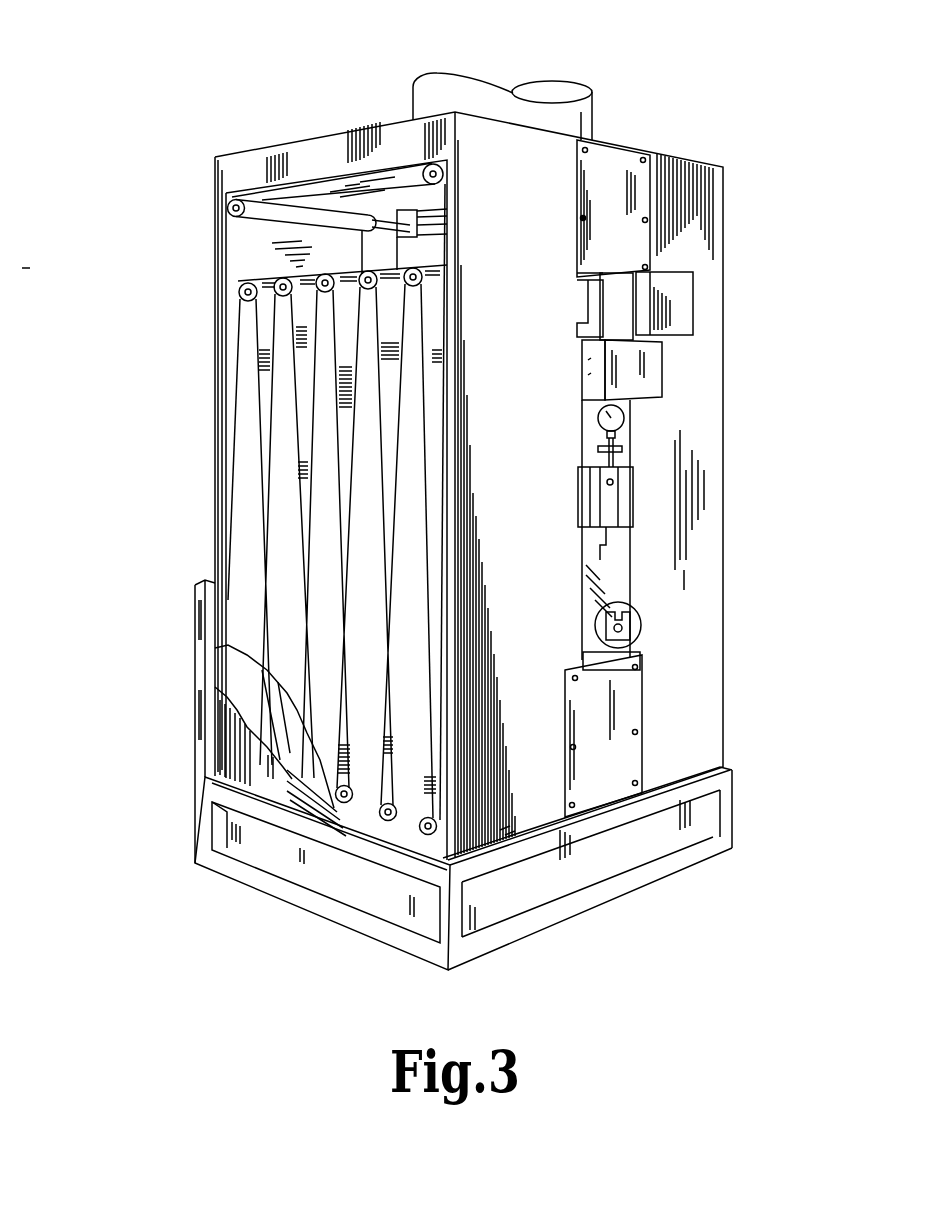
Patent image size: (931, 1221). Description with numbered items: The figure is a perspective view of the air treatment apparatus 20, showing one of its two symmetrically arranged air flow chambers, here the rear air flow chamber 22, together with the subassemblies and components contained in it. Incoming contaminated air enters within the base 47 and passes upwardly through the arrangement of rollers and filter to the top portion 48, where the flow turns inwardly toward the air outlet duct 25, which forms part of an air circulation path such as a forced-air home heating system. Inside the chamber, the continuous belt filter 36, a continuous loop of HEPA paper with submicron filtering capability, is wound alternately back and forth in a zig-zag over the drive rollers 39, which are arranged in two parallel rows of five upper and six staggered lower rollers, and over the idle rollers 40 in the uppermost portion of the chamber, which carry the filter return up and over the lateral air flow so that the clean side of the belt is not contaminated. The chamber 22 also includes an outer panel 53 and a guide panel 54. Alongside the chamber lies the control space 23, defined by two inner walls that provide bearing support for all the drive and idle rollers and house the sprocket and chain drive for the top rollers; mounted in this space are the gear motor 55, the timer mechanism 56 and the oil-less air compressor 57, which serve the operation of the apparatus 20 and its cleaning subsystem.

The apparatus 20 is at (703, 100).
The air flow chamber 22 is at (247, 236).
The control space 23 is at (627, 563).
The air outlet duct 25 is at (548, 108).
The continuous belt filter 36 is at (247, 248).
The drive rollers 39 is at (242, 292).
The idle rollers 40 is at (233, 208).
The base 47 is at (277, 855).
The top portion 48 is at (235, 163).
The outer panel 53 is at (225, 742).
The guide panel 54 is at (248, 678).
The gear motor 55 is at (690, 300).
The timer mechanism 56 is at (663, 372).
The oil-less air compressor 57 is at (637, 625).